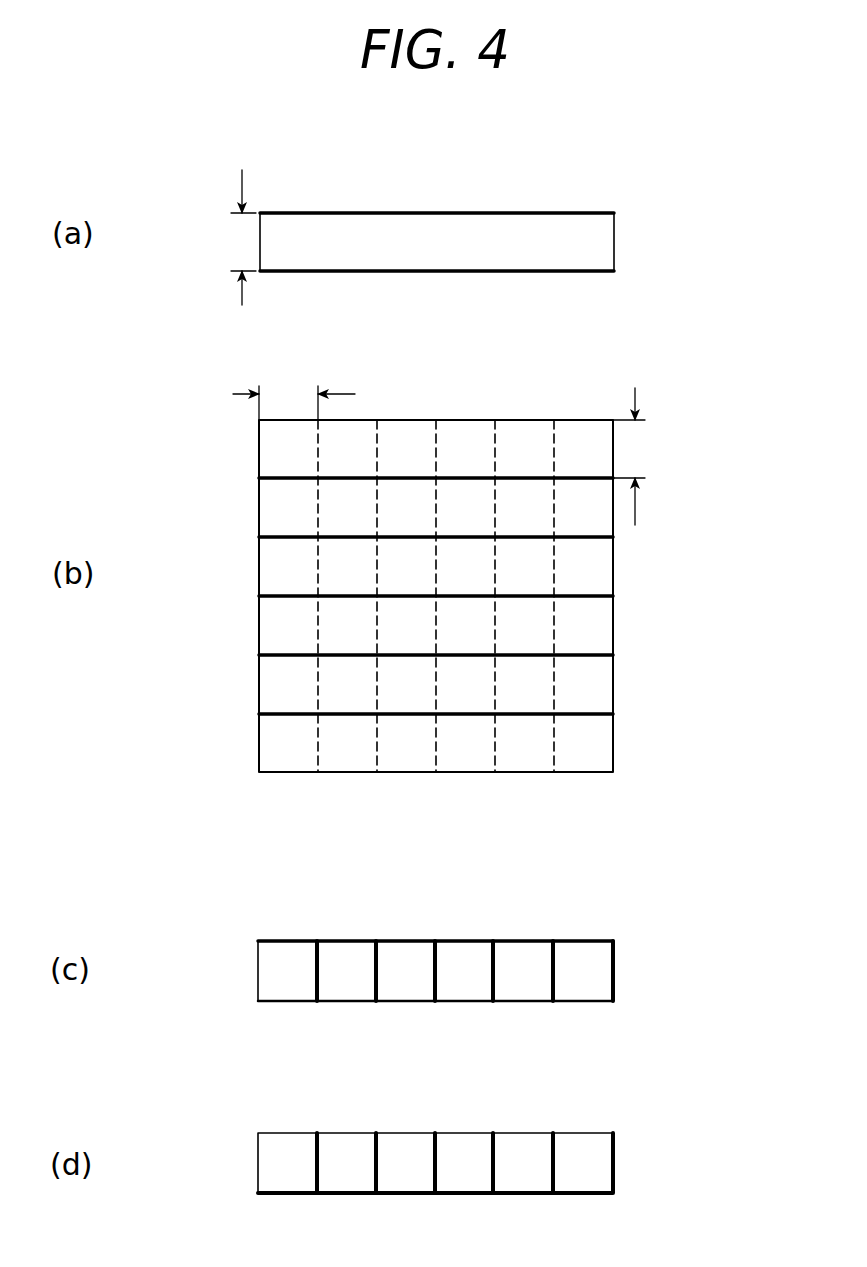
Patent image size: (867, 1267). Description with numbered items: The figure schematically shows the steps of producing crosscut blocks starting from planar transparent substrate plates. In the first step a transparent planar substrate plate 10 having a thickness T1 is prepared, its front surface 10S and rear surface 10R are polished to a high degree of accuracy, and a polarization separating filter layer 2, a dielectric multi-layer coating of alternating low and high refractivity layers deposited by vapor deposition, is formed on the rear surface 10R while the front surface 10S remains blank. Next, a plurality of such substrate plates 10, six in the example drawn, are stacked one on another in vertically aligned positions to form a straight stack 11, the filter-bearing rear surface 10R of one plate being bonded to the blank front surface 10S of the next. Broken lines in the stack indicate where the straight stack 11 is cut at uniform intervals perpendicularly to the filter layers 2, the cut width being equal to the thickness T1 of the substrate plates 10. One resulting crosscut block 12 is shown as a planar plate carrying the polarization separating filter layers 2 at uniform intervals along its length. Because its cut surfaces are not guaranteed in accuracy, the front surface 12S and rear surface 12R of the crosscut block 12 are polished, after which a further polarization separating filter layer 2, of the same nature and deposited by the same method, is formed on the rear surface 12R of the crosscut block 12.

The transparent planar substrate plate 10 is at (466, 465).
The front surface 10S is at (533, 213).
The rear surface 10R is at (565, 271).
The straight stack 11 is at (480, 413).
The crosscut block 12 is at (441, 1039).
The front surface of crosscut block 12S is at (295, 941).
The rear surface of crosscut block 12R is at (563, 1001).
The polarization separating filter layer 2 is at (320, 957).
The thickness T1 is at (442, 347).